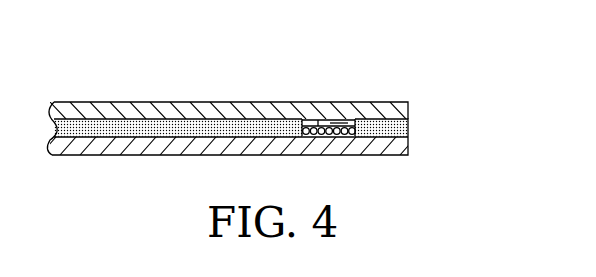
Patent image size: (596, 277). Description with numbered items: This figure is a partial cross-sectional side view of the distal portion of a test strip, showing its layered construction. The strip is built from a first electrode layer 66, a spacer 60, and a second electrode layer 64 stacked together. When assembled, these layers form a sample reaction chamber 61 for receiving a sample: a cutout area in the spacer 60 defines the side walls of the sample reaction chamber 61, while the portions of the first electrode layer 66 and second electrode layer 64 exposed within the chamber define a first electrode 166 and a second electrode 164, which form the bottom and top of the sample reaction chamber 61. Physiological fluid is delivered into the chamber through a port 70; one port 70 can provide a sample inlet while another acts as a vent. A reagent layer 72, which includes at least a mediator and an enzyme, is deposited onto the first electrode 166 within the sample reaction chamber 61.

The spacer 60 is at (228, 128).
The sample reaction chamber 61 is at (392, 102).
The second electrode layer 64 is at (354, 120).
The first electrode layer 66 is at (312, 147).
The port 70 is at (338, 121).
The reagent layer 72 is at (319, 120).
The second electrode 164 is at (333, 121).
The first electrode 166 is at (352, 133).